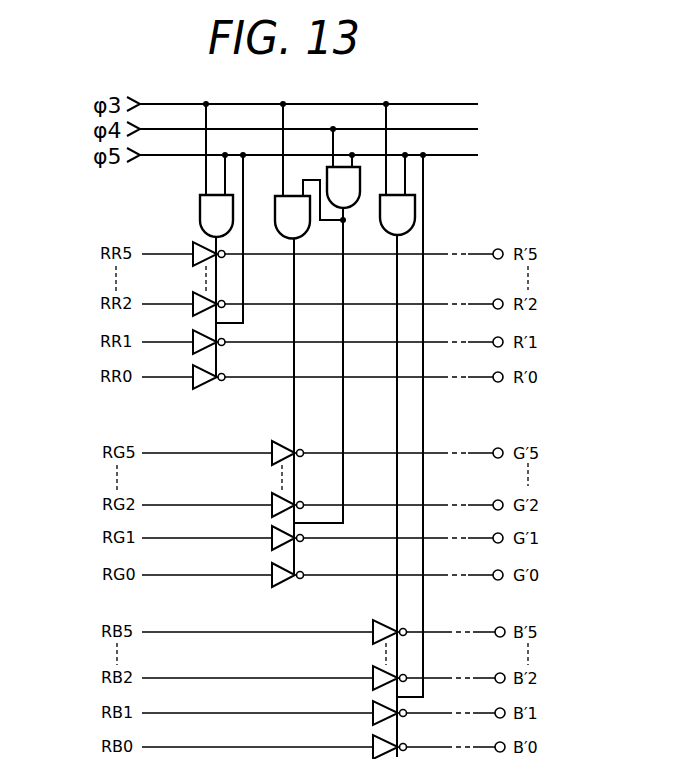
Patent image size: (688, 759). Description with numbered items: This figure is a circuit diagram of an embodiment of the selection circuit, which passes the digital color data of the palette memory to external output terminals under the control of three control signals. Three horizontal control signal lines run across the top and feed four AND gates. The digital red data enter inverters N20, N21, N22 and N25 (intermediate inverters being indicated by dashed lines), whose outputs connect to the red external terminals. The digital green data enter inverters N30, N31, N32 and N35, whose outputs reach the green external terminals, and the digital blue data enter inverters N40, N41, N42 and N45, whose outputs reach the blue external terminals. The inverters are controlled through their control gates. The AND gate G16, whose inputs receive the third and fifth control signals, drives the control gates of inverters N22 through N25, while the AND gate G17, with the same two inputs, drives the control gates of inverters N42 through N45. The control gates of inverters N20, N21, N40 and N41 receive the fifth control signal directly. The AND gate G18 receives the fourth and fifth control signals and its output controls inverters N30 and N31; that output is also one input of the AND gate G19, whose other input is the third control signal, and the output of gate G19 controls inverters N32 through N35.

The AND gate G16 is at (200, 212).
The AND gate G17 is at (415, 211).
The AND gate G18 is at (360, 177).
The AND gate G19 is at (275, 213).
The inverter N20 is at (193, 370).
The inverter N21 is at (193, 335).
The inverter N22 is at (193, 297).
The inverter N25 is at (193, 247).
The inverter N30 is at (272, 567).
The inverter N31 is at (272, 531).
The inverter N32 is at (272, 497).
The inverter N35 is at (272, 445).
The inverter N40 is at (373, 740).
The inverter N41 is at (373, 706).
The inverter N42 is at (373, 670).
The inverter N45 is at (373, 624).